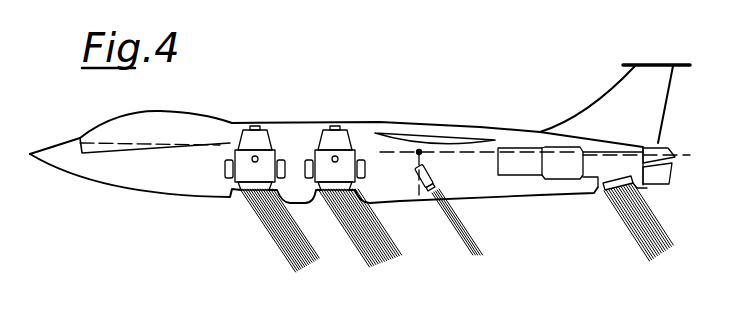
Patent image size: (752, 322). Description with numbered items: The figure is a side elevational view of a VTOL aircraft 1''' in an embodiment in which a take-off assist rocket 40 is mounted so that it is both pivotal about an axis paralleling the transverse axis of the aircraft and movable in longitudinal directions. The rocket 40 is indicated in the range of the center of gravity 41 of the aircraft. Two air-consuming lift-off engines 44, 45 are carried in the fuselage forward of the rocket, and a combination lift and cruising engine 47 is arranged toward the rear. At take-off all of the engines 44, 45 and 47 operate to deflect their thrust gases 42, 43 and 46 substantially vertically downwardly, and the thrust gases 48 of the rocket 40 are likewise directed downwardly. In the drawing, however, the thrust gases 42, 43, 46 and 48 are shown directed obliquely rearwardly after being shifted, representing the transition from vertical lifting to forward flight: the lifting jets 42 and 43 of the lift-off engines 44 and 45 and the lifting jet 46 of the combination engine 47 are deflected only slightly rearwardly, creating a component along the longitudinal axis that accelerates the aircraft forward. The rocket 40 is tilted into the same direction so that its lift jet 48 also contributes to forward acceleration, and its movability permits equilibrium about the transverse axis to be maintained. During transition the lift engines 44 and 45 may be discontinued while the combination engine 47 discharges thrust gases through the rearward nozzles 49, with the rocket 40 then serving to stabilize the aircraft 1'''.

The VTOL aircraft 1''' is at (360, 152).
The rocket 40 is at (428, 190).
The center of gravity 41 is at (420, 150).
The thrust gases 42 is at (300, 273).
The thrust gases 43 is at (386, 268).
The lift-off engine 44 is at (255, 126).
The lift-off engine 45 is at (334, 126).
The thrust gases 46 is at (638, 248).
The combination lift and cruising engine 47 is at (555, 150).
The thrust gases 48 is at (478, 247).
The rearward nozzles 49 is at (672, 156).